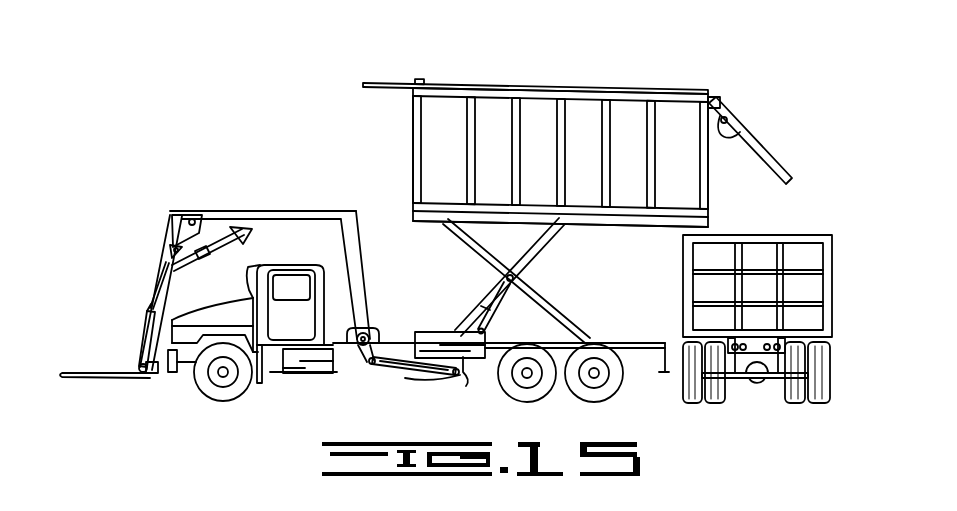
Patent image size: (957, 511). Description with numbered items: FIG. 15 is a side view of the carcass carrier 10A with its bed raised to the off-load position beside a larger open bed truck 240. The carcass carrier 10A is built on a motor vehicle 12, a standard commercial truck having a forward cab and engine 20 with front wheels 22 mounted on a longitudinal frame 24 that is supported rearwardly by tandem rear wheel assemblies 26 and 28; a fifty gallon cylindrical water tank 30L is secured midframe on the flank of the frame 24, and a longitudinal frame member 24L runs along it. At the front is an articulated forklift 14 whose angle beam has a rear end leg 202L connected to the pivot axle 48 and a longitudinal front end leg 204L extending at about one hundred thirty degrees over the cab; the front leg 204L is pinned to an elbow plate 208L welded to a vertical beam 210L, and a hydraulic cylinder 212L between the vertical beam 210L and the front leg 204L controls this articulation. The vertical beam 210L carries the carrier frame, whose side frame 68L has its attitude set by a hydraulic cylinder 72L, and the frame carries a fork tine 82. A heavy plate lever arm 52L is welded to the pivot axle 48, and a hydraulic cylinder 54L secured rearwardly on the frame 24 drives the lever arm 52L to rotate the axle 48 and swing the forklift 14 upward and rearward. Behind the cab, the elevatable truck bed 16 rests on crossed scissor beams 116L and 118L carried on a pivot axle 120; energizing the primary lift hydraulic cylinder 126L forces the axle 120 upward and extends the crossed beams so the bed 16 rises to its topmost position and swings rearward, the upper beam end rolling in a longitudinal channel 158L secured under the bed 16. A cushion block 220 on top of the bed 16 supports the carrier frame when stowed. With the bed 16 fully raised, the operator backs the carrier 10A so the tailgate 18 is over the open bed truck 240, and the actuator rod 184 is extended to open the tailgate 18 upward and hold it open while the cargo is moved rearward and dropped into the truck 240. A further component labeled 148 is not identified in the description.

The carcass carrier 10A is at (618, 56).
The motor vehicle 12 is at (255, 270).
The front end forklift 14 is at (256, 211).
The elevatable truck bed 16 is at (675, 106).
The tailgate 18 is at (775, 161).
The forward cab and engine 20 is at (210, 303).
The front wheels 22 is at (206, 395).
The longitudinal frame 24 is at (338, 375).
The longitudinal frame member 24L is at (651, 342).
The tandem rear wheel assembly 26 is at (534, 400).
The tandem rear wheel assembly 28 is at (609, 400).
The cylindrical water tank 30L is at (459, 380).
The pivot axle 48 is at (370, 310).
The lever arm 52L is at (401, 332).
The hydraulic cylinder 54L is at (421, 377).
The side frame 68L is at (140, 325).
The hydraulic cylinder 72L is at (148, 300).
The fork tine 82 is at (101, 380).
The scissor beam 116L is at (556, 247).
The scissor beam 118L is at (460, 237).
The pivot axle 120 is at (520, 277).
The hydraulic cylinder 126L is at (490, 318).
The container roof 148 is at (490, 84).
The longitudinal channel 158L is at (612, 222).
The actuator rod 184 is at (737, 133).
The rear end leg 202L is at (362, 277).
The longitudinal front end leg 204L is at (340, 201).
The elbow plate 208L is at (173, 222).
The vertical beam 210L is at (165, 256).
The hydraulic cylinder 212L is at (218, 248).
The cushion block 220 is at (415, 80).
The open bed truck 240 is at (815, 260).